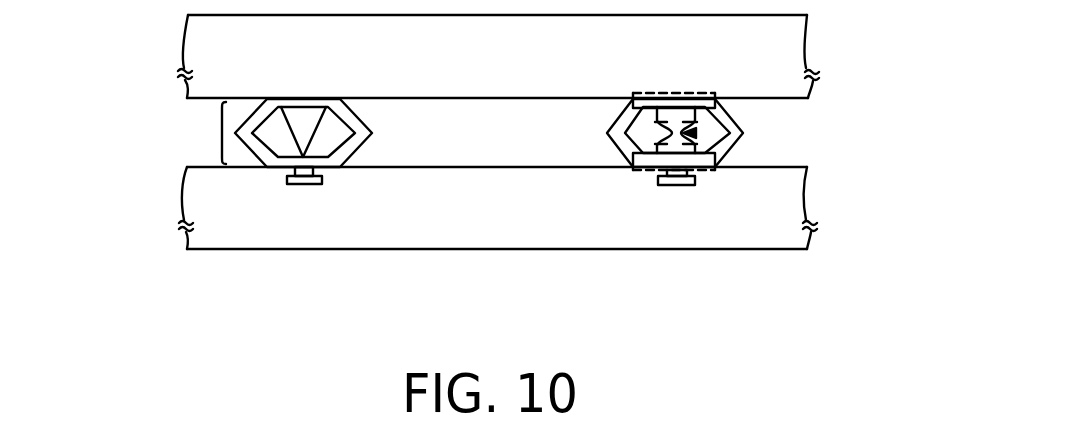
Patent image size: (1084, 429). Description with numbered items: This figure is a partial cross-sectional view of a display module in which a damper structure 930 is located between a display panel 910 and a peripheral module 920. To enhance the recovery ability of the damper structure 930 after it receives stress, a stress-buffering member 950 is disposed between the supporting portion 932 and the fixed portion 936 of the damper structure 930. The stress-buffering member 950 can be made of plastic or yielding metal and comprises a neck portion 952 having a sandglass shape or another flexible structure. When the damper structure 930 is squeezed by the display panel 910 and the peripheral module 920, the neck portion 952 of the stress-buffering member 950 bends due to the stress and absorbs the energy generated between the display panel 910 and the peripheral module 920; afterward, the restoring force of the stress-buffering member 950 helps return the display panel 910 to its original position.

The display panel 910 is at (790, 48).
The peripheral module 920 is at (803, 240).
The damper structure 930 is at (221, 134).
The supporting portion 932 is at (716, 108).
The fixed portion 936 is at (716, 153).
The stress-buffering member 950 is at (302, 125).
The neck portion 952 is at (683, 133).